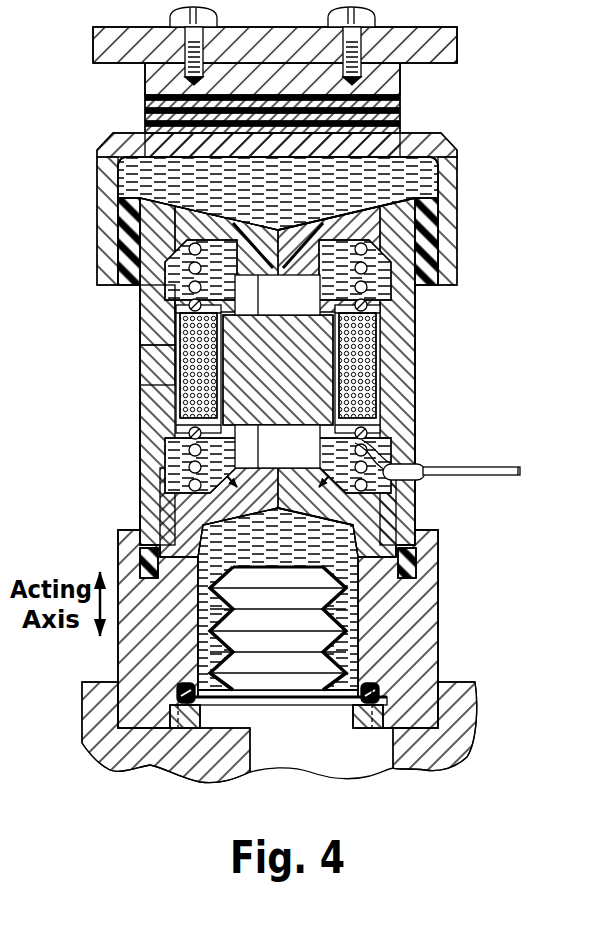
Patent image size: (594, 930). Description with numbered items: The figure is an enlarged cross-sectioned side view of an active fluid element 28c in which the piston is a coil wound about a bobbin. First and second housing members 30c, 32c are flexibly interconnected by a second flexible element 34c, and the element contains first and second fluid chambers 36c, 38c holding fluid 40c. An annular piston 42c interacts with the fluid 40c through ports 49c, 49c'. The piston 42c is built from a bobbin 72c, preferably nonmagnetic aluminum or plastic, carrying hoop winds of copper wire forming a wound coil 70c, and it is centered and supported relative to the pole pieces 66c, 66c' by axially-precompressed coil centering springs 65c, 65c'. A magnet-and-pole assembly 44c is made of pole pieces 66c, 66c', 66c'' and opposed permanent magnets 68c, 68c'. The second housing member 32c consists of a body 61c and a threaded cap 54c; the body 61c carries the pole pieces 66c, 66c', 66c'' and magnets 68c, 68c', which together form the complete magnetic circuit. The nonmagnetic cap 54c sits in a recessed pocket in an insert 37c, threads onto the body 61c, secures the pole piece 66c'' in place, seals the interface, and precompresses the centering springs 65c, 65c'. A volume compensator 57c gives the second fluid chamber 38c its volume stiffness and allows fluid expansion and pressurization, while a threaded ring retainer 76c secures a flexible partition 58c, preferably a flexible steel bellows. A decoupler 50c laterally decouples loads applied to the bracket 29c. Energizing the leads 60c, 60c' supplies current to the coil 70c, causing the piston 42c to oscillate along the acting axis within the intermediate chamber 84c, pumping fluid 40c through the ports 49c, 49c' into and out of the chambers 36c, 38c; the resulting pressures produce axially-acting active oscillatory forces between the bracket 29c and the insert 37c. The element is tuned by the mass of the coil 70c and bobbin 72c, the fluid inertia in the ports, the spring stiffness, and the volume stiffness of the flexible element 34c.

The active fluid element 28c is at (420, 408).
The bracket 29c is at (457, 40).
The first housing member 30c is at (462, 188).
The second housing member 32c is at (426, 501).
The second flexible element 34c is at (118, 252).
The first fluid chamber 36c is at (278, 193).
The insert 37c is at (470, 722).
The second fluid chamber 38c is at (278, 599).
The fluid 40c is at (445, 137).
The piston 42c is at (140, 312).
The body 44c is at (140, 362).
The port 49c is at (346, 203).
The port 49c' is at (315, 533).
The decoupler 50c is at (402, 97).
The threaded cap 54c is at (430, 575).
The volume compensator 57c is at (335, 608).
The flexible partition 58c is at (250, 712).
The energizing lead 60c is at (480, 452).
The energizing lead 60c' is at (552, 503).
The body 61c is at (415, 377).
The coil centering spring 65c is at (337, 284).
The coil centering spring 65c' is at (427, 444).
The pole piece 66c is at (342, 280).
The pole piece 66c' is at (278, 370).
The pole piece 66c'' is at (346, 507).
The permanent magnet 68c is at (277, 295).
The permanent magnet 68c' is at (277, 446).
The wound coil 70c is at (140, 383).
The bobbin 72c is at (140, 430).
The threaded ring retainer 76c is at (185, 730).
The intermediate chamber 84c is at (175, 455).